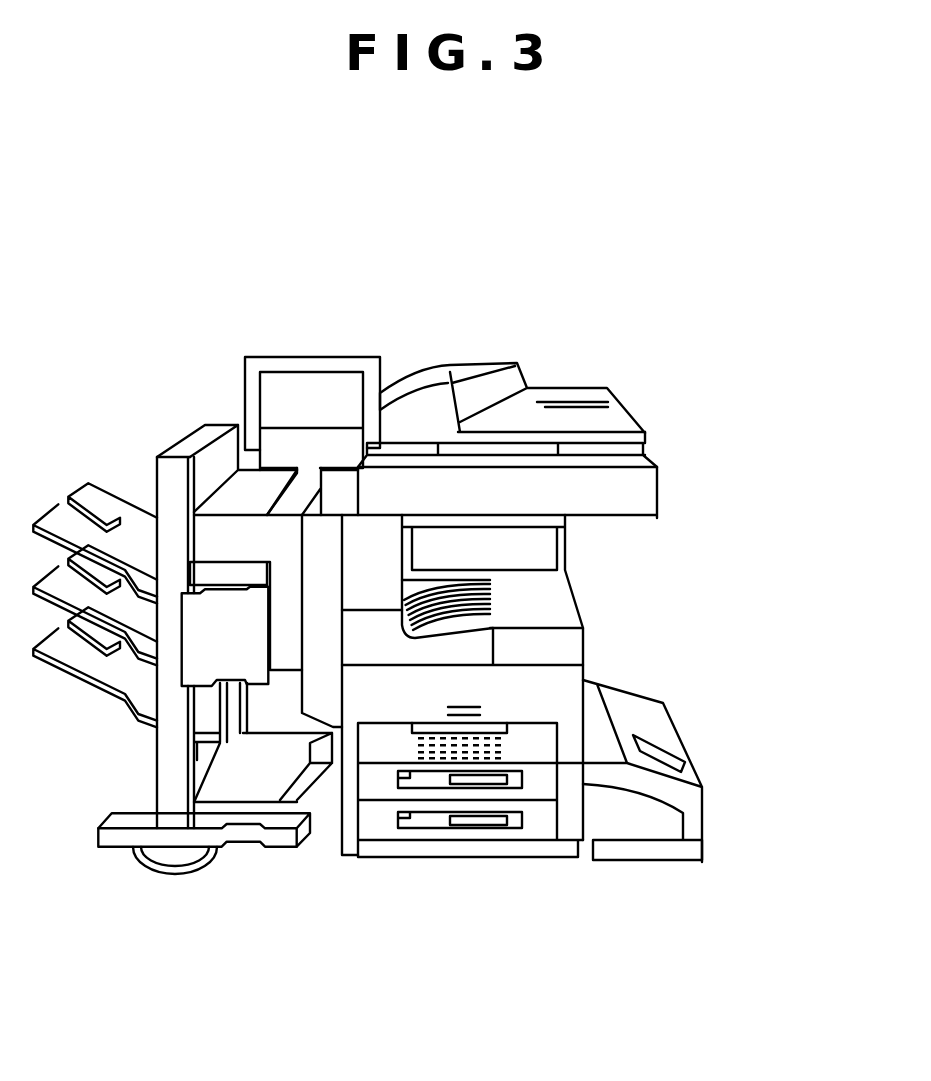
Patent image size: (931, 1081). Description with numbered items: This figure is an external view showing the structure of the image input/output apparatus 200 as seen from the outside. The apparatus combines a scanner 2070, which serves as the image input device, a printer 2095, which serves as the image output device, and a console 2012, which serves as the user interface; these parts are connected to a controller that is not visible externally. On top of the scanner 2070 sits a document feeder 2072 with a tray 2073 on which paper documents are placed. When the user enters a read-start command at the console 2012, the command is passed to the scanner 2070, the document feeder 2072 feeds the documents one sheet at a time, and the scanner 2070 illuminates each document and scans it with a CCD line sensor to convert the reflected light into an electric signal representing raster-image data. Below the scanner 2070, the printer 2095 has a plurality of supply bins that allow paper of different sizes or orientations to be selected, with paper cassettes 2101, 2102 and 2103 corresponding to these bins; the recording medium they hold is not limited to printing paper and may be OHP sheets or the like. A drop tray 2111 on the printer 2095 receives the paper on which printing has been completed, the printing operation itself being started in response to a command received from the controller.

The image input/output apparatus 200 is at (128, 947).
The console 2012 is at (381, 263).
The scanner 2070 is at (795, 515).
The document feeder 2072 is at (573, 390).
The tray 2073 is at (477, 368).
The printer 2095 is at (773, 517).
The paper cassette 2101 is at (427, 783).
The paper cassette 2102 is at (537, 830).
The paper cassette 2103 is at (652, 833).
The drop tray 2111 is at (497, 588).